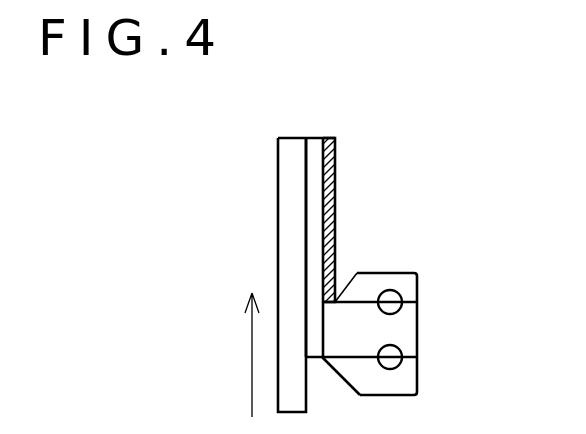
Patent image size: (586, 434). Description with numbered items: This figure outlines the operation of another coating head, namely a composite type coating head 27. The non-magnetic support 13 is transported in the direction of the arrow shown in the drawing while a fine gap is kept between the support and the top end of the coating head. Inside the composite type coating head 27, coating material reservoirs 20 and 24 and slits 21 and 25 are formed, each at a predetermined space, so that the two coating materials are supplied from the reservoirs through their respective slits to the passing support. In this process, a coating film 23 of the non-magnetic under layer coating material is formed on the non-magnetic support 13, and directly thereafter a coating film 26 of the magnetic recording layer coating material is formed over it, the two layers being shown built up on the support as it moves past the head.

The non-magnetic support 13 is at (285, 187).
The coating film 23 is at (318, 137).
The coating film 26 is at (335, 163).
The slit 25 is at (347, 285).
The composite type coating head 27 is at (400, 272).
The coating material reservoir 24 is at (386, 305).
The coating material reservoir 20 is at (386, 360).
The slit 21 is at (348, 360).